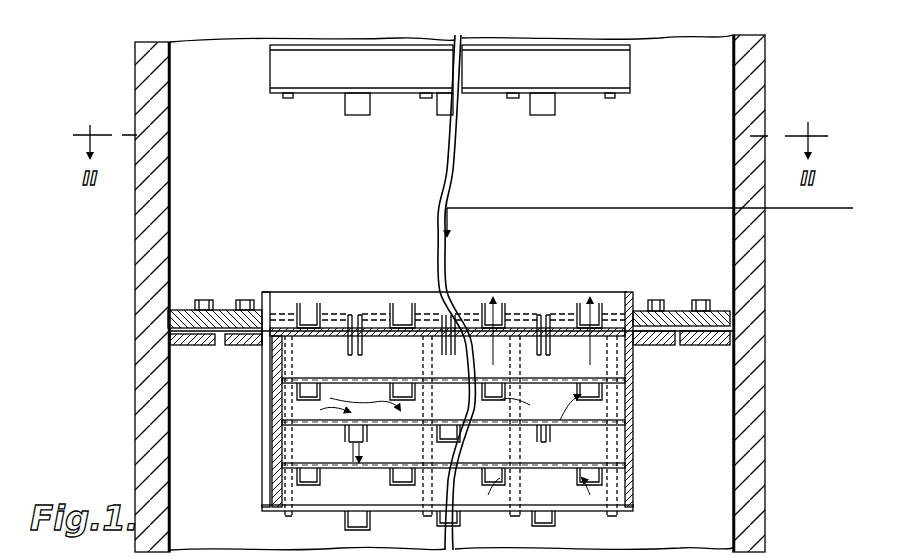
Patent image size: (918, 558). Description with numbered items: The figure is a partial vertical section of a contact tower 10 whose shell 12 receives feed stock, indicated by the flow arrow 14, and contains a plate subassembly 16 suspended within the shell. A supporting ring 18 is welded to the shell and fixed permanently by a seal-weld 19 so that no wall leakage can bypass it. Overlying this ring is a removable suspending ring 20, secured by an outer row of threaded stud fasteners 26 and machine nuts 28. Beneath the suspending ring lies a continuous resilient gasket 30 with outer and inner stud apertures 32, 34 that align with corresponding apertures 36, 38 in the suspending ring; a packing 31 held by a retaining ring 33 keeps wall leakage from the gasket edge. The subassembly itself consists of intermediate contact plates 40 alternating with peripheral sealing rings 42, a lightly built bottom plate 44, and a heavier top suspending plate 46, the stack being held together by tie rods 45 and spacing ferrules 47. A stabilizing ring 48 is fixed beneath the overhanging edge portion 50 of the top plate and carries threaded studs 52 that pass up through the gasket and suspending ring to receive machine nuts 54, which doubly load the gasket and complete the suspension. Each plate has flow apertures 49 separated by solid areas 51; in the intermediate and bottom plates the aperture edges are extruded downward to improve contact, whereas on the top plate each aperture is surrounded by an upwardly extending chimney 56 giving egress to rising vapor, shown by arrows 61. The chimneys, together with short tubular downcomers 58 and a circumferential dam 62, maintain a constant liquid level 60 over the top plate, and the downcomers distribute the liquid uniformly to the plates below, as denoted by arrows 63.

The contact tower 10 is at (135, 62).
The shell 12 is at (135, 100).
The flow arrow 14 is at (565, 208).
The plate subassembly 16 is at (270, 78).
The supporting ring 18 is at (215, 346).
The seal-weld 19 is at (168, 345).
The suspending ring 20 is at (215, 315).
The threaded stud fastener 26 is at (205, 298).
The machine nut 28 is at (203, 299).
The gasket 30 is at (230, 346).
The packing 31 is at (168, 318).
The outer gasket aperture 32 is at (195, 346).
The retaining ring 33 is at (178, 308).
The inner gasket aperture 34 is at (248, 346).
The outer suspending ring aperture 36 is at (168, 338).
The inner suspending ring aperture 38 is at (266, 296).
The contact plate 40 is at (560, 385).
The peripheral sealing ring 42 is at (630, 380).
The bottom plate 44 is at (630, 507).
The tie rod 45 is at (276, 447).
The top suspending plate 46 is at (626, 315).
The spacing ferrule 47 is at (285, 400).
The stabilizing ring 48 is at (258, 336).
The flow aperture 49 is at (300, 385).
The overhanging edge portion 50 is at (633, 346).
The solid plate area 51 is at (335, 314).
The threaded stud 52 is at (250, 300).
The machine nut 54 is at (245, 298).
The chimney 56 is at (310, 303).
The downcomer 58 is at (400, 305).
The liquid level 60 is at (355, 318).
The vapor flow arrow 61 is at (493, 298).
The circumferential dam 62 is at (545, 340).
The liquid distribution arrow 63 is at (355, 420).